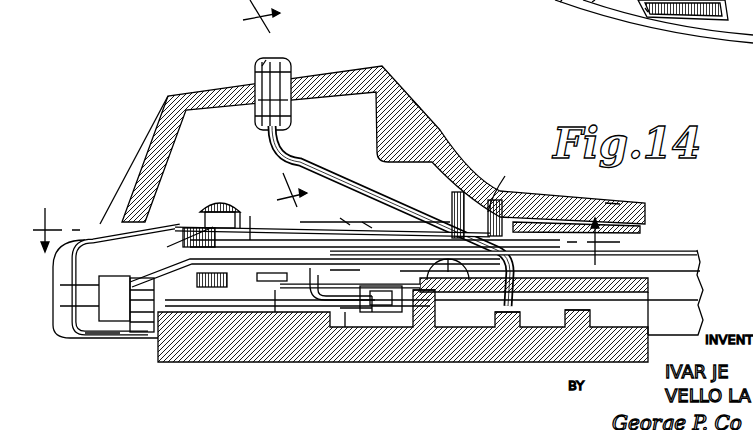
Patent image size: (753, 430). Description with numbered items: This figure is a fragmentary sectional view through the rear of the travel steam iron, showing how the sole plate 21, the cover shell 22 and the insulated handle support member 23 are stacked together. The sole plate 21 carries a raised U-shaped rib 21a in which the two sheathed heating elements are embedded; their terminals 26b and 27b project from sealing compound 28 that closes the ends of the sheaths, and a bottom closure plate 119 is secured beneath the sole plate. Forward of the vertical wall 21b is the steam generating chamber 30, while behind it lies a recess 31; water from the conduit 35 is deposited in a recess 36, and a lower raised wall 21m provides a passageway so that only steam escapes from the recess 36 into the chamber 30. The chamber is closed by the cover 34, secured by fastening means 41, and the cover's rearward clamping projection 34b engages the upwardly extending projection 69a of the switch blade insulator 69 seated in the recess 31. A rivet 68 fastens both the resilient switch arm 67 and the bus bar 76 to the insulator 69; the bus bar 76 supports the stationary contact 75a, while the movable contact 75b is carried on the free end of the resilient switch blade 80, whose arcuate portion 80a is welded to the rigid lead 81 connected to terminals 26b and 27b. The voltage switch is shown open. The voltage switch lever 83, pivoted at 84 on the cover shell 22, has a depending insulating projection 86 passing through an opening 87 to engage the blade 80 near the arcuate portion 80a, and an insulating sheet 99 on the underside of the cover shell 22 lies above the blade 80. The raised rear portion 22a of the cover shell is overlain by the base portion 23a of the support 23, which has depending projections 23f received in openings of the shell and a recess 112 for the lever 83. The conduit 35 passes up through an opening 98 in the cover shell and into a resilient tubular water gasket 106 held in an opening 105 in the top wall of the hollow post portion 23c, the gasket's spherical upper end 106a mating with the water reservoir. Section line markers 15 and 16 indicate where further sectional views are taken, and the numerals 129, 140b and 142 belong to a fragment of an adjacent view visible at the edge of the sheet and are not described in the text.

The section line 15- 15 is at (271, 103).
The section line 16- 16 is at (365, 225).
The sole plate 21 is at (476, 330).
The raised integral U-shaped rib 21a is at (563, 208).
The vertical wall portion 21b is at (440, 332).
The raised wall 21m is at (568, 330).
The cover shell 22 is at (690, 252).
The raised rear portion of cover shell 22a is at (334, 214).
The handle support member 23 is at (433, 127).
The base portion 23a is at (612, 204).
The upwardly extending hollow side post portion 23c is at (417, 103).
The depending projections 23f is at (490, 205).
The terminal 26b is at (98, 312).
The terminal 27b is at (90, 286).
The sealing compound 28 is at (136, 306).
The steam generating chamber 30 is at (618, 314).
The recess 31 is at (372, 330).
The cover 34 is at (648, 288).
The clamping projection 34b is at (356, 322).
The conduit 35 is at (305, 200).
The recess 36 is at (493, 312).
The fastening means 41 is at (430, 340).
The resilient switch arm 67 is at (274, 312).
The rivet 68 is at (243, 270).
The switch blade insulator 69 is at (216, 312).
The upwardly extending projection 69a is at (330, 312).
The stationary contact 75a is at (370, 366).
The movable contact 75b is at (422, 214).
The bus bar 76 is at (306, 314).
The resilient switch blade 80 is at (367, 224).
The arcuate portion 80a is at (193, 265).
The rigid lead 81 is at (107, 276).
The voltage switch lever 83 is at (183, 215).
The pivot mounting 84 is at (213, 200).
The depending insulating projection 86 is at (168, 214).
The opening 87 is at (250, 214).
The opening 98 is at (368, 214).
The insulating sheet 99 is at (346, 214).
The opening 105 is at (286, 78).
The resilient tubular water gasket 106 is at (270, 60).
The spherical upper end 106a is at (268, 70).
The recess 112 is at (251, 214).
The bottom closure plate 119 is at (60, 324).
The element 129 is at (647, 10).
The element 140b is at (563, 0).
The element 142 is at (594, 0).